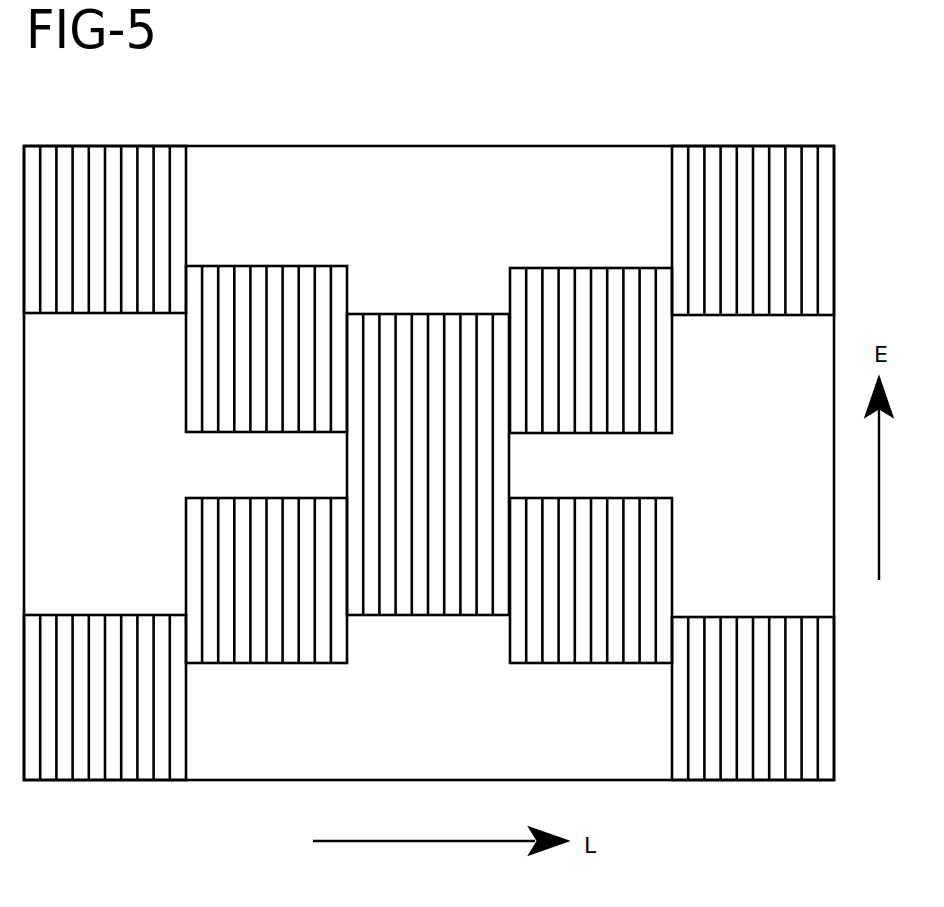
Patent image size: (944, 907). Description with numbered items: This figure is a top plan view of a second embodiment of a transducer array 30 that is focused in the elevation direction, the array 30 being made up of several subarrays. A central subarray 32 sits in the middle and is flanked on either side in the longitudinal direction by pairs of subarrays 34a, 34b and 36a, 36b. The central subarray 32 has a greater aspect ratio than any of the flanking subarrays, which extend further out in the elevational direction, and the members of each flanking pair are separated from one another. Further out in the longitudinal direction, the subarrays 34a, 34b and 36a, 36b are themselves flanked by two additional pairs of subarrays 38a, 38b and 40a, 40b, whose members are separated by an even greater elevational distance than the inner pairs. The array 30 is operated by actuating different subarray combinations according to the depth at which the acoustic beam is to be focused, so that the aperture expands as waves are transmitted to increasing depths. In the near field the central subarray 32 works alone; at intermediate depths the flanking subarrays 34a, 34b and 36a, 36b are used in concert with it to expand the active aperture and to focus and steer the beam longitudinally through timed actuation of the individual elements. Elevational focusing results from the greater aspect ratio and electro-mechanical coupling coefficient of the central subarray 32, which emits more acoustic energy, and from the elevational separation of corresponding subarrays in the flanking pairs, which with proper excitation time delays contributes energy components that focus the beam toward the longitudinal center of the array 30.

The array 30 is at (242, 780).
The central subarray 32 is at (446, 314).
The flanking subarray 34a is at (275, 266).
The flanking subarray 34b is at (277, 663).
The flanking subarray 36a is at (566, 268).
The flanking subarray 36b is at (613, 663).
The subarray 38a is at (126, 313).
The subarray 38b is at (110, 615).
The subarray 40a is at (778, 315).
The subarray 40b is at (764, 617).